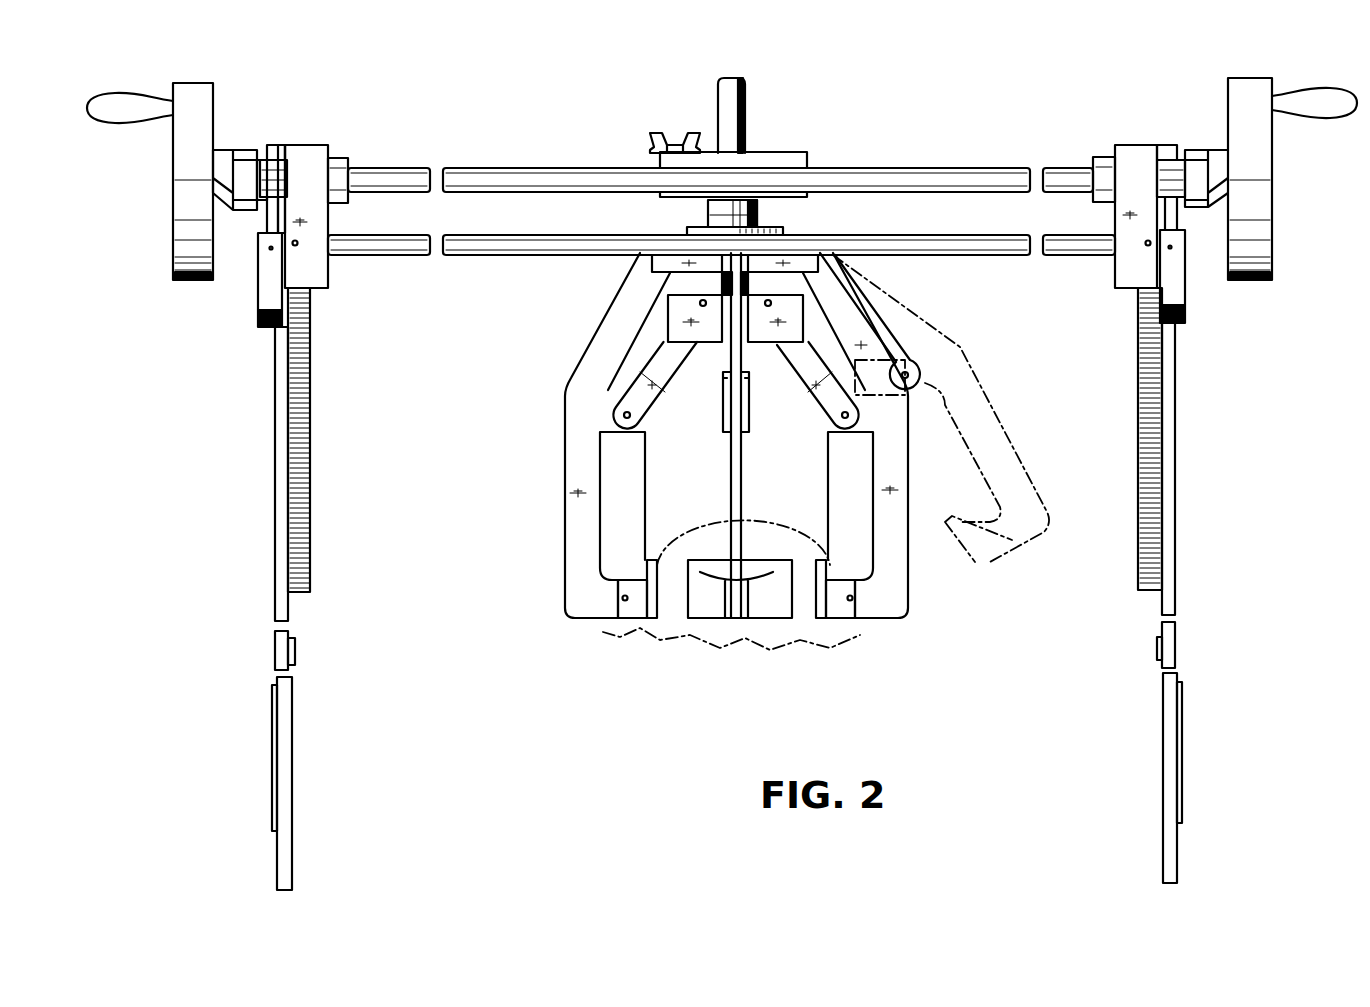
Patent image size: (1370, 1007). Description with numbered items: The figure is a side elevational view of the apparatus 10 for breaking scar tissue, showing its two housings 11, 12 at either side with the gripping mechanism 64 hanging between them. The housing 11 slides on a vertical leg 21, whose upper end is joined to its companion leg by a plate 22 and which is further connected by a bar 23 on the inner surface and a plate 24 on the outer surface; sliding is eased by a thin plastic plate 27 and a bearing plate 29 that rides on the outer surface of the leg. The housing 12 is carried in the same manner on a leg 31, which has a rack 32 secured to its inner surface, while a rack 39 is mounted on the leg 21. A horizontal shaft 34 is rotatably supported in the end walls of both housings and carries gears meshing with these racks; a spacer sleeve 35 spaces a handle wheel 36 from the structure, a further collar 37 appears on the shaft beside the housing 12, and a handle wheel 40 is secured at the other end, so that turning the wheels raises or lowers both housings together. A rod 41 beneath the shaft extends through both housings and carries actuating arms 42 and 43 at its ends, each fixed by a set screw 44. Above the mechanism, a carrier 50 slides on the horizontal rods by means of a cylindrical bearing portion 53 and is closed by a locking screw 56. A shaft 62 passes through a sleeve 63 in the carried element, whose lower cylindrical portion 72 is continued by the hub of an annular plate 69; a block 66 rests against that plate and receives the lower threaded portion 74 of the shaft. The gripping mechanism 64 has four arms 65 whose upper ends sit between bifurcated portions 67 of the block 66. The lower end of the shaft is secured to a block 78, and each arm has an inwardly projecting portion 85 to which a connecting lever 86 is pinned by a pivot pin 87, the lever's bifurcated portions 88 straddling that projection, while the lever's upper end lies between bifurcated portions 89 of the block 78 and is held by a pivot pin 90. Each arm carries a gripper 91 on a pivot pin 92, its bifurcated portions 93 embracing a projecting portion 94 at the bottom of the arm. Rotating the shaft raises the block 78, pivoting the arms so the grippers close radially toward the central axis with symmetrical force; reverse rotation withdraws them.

The apparatus 10 is at (444, 108).
The housing 11 is at (305, 147).
The housing 12 is at (1120, 147).
The leg 21 is at (273, 470).
The plate 22 is at (270, 145).
The bar 23 is at (296, 652).
The plate 24 is at (275, 720).
The plate 27 is at (283, 158).
The bearing plate 29 is at (265, 215).
The leg 31 is at (1176, 597).
The rack 32 is at (1140, 540).
The shaft 34 is at (495, 168).
The spacer sleeve 35 is at (1177, 158).
The handle wheel 36 is at (1272, 232).
The collar 37 is at (1100, 155).
The rack 39 is at (310, 466).
The handle wheel 40 is at (172, 228).
The rod 41 is at (352, 257).
The actuating arm 42 is at (258, 318).
The actuating arm 43 is at (1183, 320).
The set screw 44 is at (271, 250).
The carrier 50 is at (768, 143).
The cylindrical bearing portion 53 is at (808, 160).
The locking screw 56 is at (655, 135).
The shaft 62 is at (745, 90).
The sleeve 63 is at (760, 207).
The gripping mechanism 64 is at (552, 659).
The arm 65 is at (557, 491).
The block 66 is at (647, 270).
The bifurcated portion 67 is at (820, 252).
The annular plate 69 is at (790, 227).
The lower cylindrical portion 72 is at (708, 215).
The lower threaded portion 74 is at (700, 304).
The block 78 is at (813, 310).
The inwardly projecting portion 85 is at (860, 437).
The connecting lever 86 is at (818, 421).
The pivot pin 87 is at (848, 413).
The bifurcated portion 88 is at (722, 405).
The bifurcated portion 89 is at (788, 297).
The pivot pin 90 is at (722, 293).
The gripper 91 is at (857, 528).
The pivot pin 92 is at (851, 601).
The bifurcated portion 93 is at (822, 606).
The projecting portion 94 is at (866, 619).